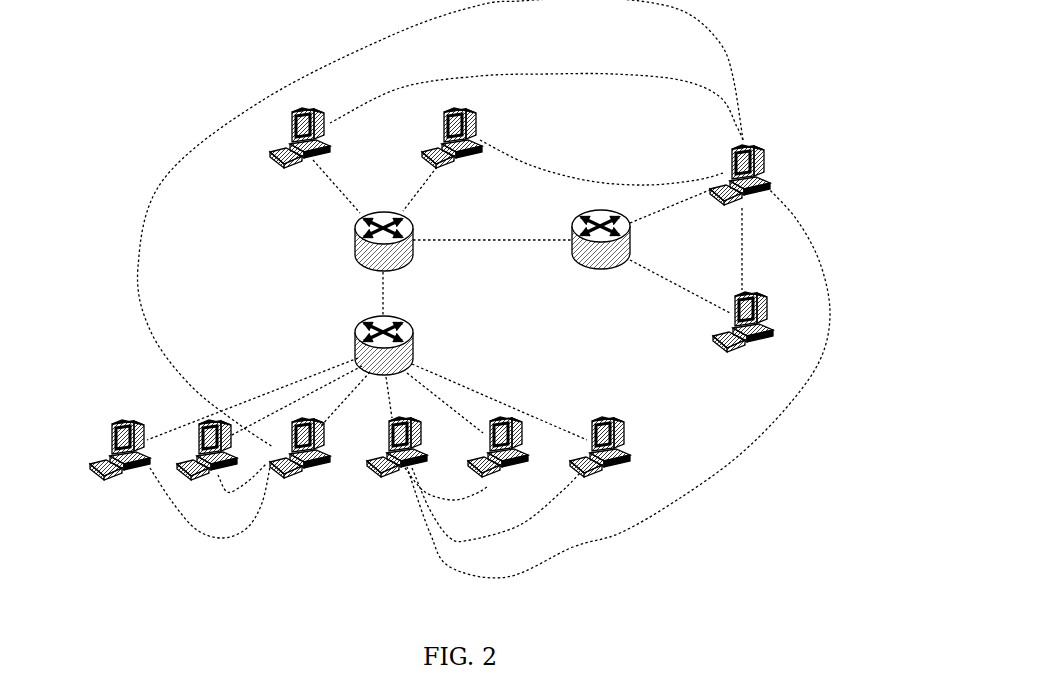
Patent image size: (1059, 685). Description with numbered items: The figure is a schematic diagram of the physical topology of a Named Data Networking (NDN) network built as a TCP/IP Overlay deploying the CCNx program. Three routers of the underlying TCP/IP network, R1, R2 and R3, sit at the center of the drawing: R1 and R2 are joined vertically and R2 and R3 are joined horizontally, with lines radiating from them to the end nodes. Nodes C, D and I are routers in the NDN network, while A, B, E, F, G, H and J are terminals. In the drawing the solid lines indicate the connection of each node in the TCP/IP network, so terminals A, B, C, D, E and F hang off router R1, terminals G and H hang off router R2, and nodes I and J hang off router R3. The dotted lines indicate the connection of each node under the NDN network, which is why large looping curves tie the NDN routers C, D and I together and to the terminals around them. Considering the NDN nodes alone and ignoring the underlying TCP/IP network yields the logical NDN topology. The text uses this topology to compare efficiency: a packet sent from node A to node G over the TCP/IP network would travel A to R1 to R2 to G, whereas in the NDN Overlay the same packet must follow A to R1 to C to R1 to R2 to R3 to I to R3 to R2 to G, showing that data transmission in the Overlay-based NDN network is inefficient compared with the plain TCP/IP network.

The terminal A is at (120, 460).
The terminal B is at (207, 460).
The NDN router C is at (300, 459).
The NDN router D is at (397, 458).
The terminal E is at (498, 458).
The terminal F is at (600, 458).
The terminal G is at (293, 138).
The terminal H is at (451, 138).
The NDN router I is at (747, 175).
The terminal J is at (747, 322).
The TCP/IP router R1 is at (369, 345).
The TCP/IP router R2 is at (371, 241).
The TCP/IP router R3 is at (615, 239).